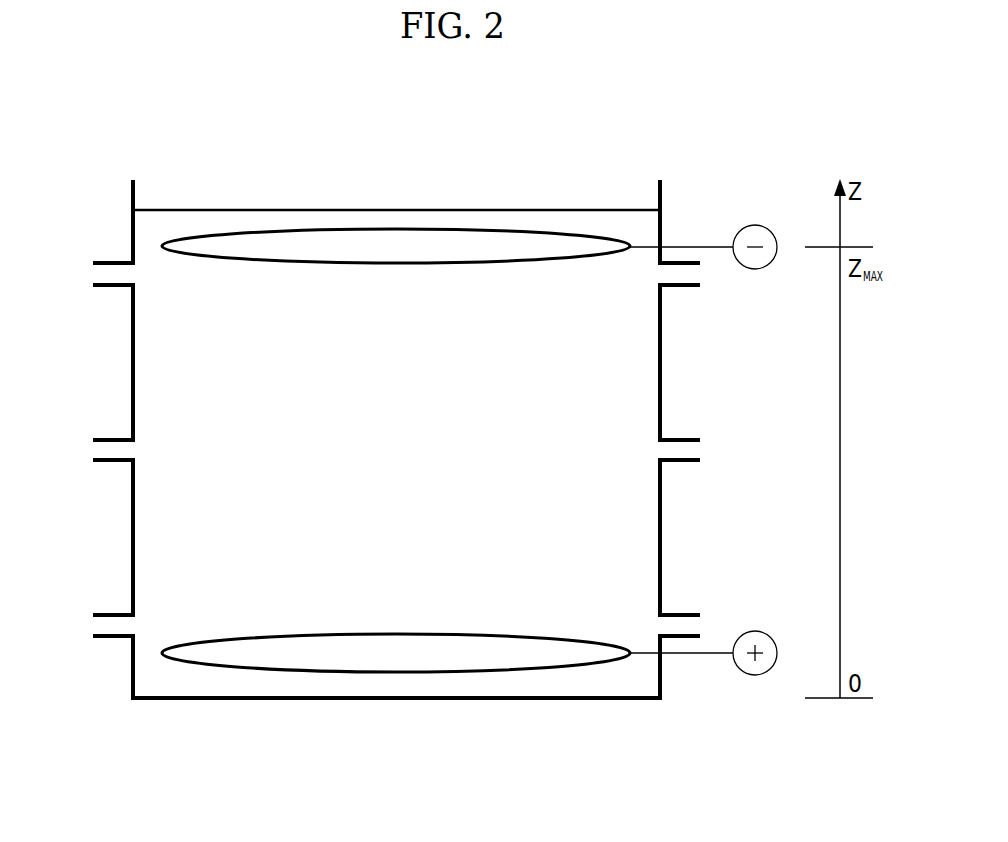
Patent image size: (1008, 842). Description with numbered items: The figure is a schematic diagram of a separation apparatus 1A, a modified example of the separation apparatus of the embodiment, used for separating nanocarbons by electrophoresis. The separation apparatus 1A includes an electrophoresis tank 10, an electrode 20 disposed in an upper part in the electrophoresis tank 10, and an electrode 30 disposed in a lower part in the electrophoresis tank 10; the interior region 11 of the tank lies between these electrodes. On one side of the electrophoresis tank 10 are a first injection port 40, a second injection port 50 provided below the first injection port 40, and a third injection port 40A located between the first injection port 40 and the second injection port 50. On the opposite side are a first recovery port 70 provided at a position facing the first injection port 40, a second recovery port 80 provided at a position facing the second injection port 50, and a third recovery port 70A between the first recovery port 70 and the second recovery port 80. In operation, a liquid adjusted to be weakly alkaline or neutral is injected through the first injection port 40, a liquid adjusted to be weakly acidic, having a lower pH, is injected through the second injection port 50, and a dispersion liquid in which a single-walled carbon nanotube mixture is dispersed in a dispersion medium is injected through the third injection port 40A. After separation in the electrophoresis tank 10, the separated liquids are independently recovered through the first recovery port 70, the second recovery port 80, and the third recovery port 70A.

The separation apparatus 1A is at (188, 162).
The electrophoresis tank 10 is at (663, 193).
The internal space 11 is at (276, 375).
The electrode 20 is at (615, 243).
The electrode 30 is at (395, 673).
The first injection port 40 is at (110, 262).
The third injection port 40A is at (110, 438).
The second injection port 50 is at (110, 614).
The first recovery port 70 is at (678, 286).
The third recovery port 70A is at (678, 438).
The second recovery port 80 is at (678, 614).